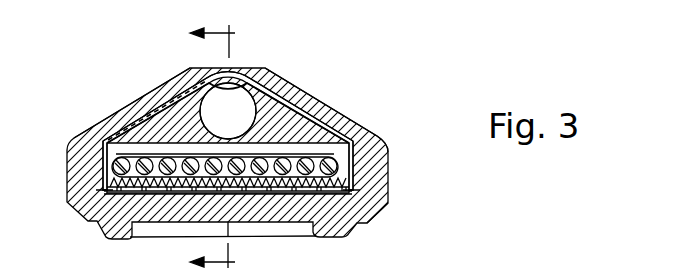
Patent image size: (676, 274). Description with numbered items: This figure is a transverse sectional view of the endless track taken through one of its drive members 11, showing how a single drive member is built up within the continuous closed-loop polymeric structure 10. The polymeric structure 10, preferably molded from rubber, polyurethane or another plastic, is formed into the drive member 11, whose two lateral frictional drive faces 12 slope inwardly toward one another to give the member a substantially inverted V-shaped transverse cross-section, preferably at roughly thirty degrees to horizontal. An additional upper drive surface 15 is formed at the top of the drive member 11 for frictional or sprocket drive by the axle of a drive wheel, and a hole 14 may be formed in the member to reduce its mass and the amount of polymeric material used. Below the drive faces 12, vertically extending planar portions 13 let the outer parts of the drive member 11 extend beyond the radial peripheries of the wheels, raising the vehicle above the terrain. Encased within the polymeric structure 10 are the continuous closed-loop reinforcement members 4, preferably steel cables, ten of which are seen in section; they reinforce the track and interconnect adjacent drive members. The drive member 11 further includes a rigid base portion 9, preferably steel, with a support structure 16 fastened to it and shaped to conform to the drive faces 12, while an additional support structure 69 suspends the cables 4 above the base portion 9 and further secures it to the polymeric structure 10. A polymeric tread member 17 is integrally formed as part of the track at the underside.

The reinforcement member 4 is at (48, 216).
The base portion 9 is at (296, 192).
The polymeric structure 10 is at (266, 68).
The drive member 11 is at (311, 80).
The drive face 12 is at (110, 116).
The vertically extending planar portion 13 is at (67, 163).
The hole 14 is at (198, 95).
The upper drive surface 15 is at (233, 68).
The support structure 16 is at (358, 131).
The polymeric tread member 17 is at (382, 206).
The additional support structure 69 is at (380, 136).